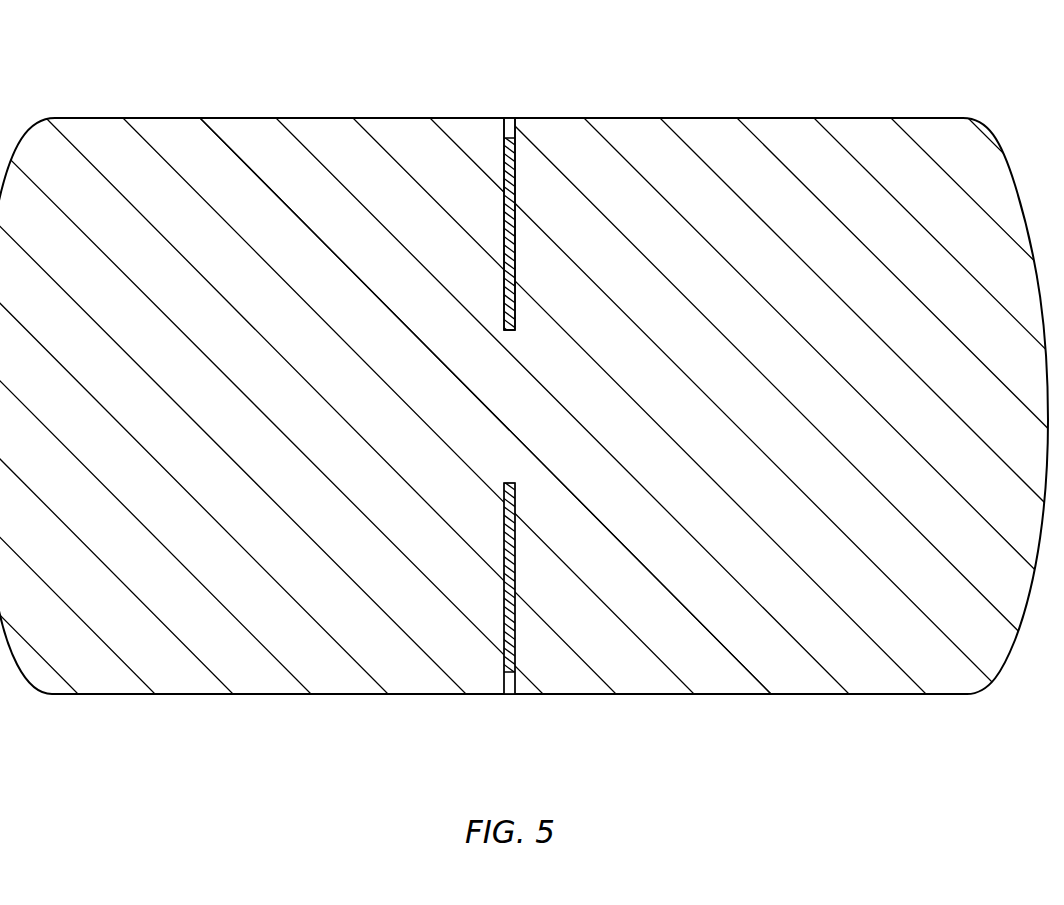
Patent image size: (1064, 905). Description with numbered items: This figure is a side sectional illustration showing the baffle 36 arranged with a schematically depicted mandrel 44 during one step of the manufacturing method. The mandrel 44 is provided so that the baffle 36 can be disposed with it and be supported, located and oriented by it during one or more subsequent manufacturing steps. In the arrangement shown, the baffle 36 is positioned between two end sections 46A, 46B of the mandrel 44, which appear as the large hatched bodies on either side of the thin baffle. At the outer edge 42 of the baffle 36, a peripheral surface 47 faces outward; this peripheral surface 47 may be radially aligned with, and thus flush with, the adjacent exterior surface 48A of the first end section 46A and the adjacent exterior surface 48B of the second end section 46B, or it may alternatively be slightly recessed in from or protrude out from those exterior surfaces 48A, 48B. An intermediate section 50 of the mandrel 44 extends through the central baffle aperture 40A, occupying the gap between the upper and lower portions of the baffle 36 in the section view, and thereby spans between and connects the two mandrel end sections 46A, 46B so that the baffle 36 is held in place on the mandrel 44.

The baffle 36 is at (530, 202).
The central baffle aperture 40A is at (511, 331).
The outer edge 42 is at (509, 118).
The mandrel 44 is at (942, 110).
The end section 46A is at (175, 127).
The end section 46B is at (849, 130).
The peripheral surface 47 is at (509, 695).
The exterior surface 48A is at (283, 118).
The exterior surface 48B is at (737, 118).
The intermediate section 50 is at (508, 444).